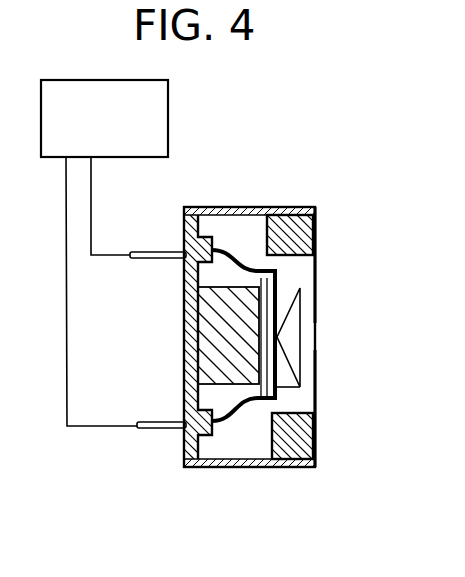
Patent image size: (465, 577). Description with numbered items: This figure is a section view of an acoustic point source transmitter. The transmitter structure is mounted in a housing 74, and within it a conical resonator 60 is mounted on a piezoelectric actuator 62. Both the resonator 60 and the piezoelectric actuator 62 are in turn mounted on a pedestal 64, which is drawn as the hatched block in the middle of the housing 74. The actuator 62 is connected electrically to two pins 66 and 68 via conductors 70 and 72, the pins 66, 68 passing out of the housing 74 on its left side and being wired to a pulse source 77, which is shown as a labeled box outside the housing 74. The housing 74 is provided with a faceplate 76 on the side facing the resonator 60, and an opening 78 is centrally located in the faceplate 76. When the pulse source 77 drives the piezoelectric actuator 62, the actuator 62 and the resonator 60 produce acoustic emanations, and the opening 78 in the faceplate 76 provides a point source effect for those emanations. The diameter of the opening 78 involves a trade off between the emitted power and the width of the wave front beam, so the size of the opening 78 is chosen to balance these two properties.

The conical resonator 60 is at (300, 305).
The piezoelectric actuator 62 is at (277, 388).
The pedestal 64 is at (197, 318).
The pin 66 is at (156, 248).
The pin 68 is at (157, 432).
The conductor 70 is at (233, 250).
The conductor 72 is at (239, 402).
The housing 74 is at (261, 206).
The faceplate 76 is at (317, 265).
The pulse source 77 is at (169, 116).
The opening 78 is at (313, 333).